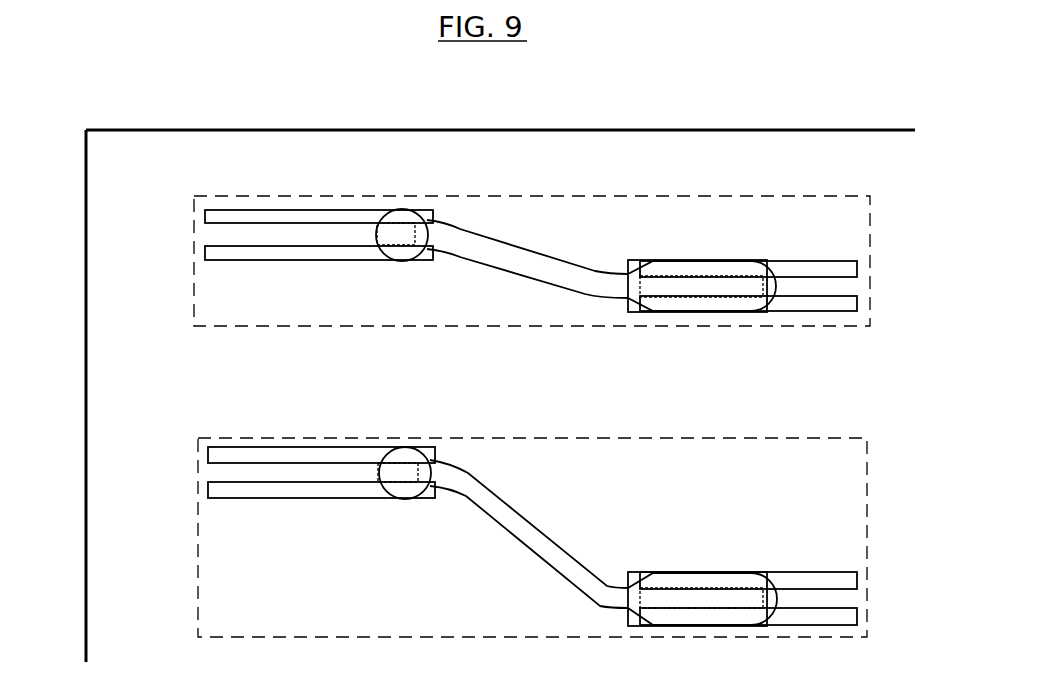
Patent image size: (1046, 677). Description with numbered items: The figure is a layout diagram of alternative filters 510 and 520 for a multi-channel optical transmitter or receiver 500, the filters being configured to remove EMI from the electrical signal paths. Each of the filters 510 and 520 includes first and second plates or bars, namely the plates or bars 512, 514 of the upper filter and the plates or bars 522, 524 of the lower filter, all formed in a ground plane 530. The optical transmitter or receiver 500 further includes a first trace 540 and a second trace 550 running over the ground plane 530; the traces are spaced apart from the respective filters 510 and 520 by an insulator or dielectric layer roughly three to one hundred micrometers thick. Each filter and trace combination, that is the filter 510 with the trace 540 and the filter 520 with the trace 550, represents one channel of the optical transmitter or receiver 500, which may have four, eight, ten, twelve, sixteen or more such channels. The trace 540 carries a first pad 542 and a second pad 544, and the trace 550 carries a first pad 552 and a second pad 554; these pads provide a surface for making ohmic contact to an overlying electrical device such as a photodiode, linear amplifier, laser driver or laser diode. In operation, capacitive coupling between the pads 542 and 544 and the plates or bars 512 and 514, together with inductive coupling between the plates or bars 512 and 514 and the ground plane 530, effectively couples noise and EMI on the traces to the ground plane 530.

The multi-channel optical transmitter or receiver 500 is at (344, 90).
The filter 510 is at (538, 194).
The first plates and/or bars 512 is at (287, 235).
The second plates and/or bars 514 is at (807, 283).
The filter 520 is at (550, 438).
The first plates and/or bars 522 is at (308, 470).
The second plates and/or bars 524 is at (795, 598).
The ground plane 530 is at (662, 392).
The first trace 540 is at (512, 242).
The first pad 542 is at (393, 255).
The second pad 544 is at (720, 267).
The second trace 550 is at (530, 517).
The first pad 552 is at (398, 492).
The second pad 554 is at (717, 580).